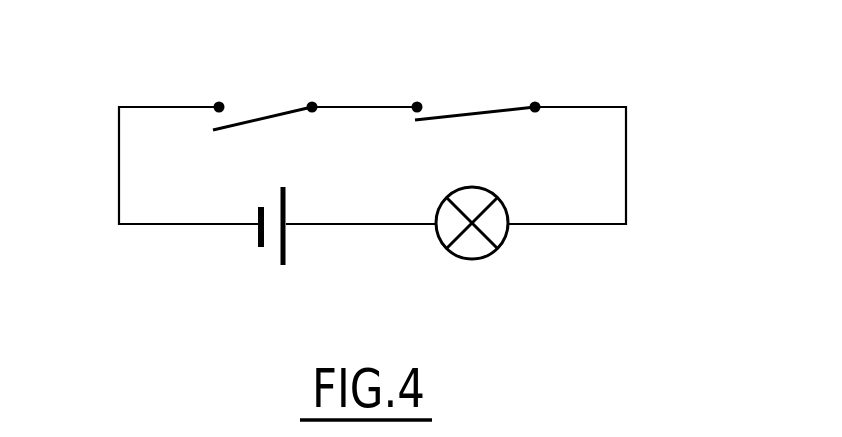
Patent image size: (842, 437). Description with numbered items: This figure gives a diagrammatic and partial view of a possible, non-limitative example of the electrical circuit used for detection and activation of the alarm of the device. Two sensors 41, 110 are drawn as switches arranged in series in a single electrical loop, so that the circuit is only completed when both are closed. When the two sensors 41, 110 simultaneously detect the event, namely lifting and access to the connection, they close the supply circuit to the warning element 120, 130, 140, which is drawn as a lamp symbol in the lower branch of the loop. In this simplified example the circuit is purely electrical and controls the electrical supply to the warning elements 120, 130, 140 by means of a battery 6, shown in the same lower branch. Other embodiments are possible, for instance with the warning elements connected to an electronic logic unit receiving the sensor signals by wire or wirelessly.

The sensor 41 is at (264, 92).
The sensor 110 is at (503, 76).
The battery 6 is at (250, 276).
The warning element 120 is at (574, 251).
The warning element 130 is at (472, 223).
The warning element 140 is at (472, 223).